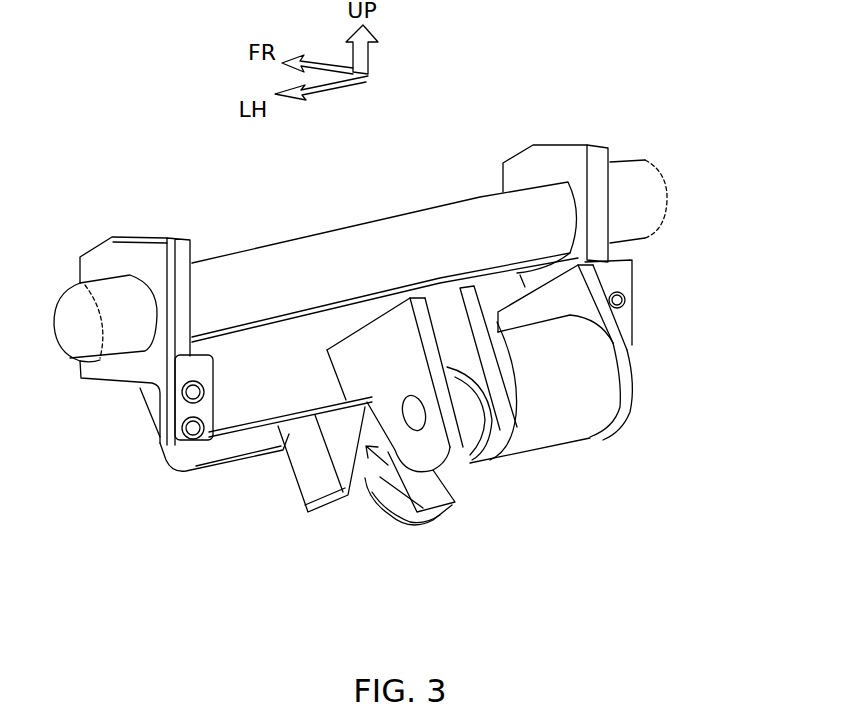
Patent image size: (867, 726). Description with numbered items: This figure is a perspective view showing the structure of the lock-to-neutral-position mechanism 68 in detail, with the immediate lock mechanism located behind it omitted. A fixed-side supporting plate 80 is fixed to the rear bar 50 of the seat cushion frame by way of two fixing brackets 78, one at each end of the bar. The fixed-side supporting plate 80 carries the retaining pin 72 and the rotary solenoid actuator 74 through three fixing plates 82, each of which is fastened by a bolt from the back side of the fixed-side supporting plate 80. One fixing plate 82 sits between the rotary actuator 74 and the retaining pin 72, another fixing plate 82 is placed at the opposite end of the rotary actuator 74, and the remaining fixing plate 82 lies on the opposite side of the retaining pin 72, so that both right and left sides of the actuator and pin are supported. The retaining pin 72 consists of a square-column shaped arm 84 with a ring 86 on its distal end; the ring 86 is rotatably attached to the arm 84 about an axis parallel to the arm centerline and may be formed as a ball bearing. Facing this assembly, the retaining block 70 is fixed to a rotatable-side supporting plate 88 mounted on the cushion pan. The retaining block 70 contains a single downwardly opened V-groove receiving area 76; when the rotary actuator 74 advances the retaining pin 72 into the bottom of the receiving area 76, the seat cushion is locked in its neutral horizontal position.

The rear bar 50 is at (423, 227).
The lock-to-neutral-position mechanism 68 is at (602, 446).
The retaining block 70 is at (369, 390).
The retaining pin 72 is at (458, 530).
The rotary solenoid actuator 74 is at (587, 415).
The receiving area 76 is at (363, 477).
The fixing bracket 78 is at (192, 242).
The fixed-side supporting plate 80 is at (262, 350).
The fixing plate 82 is at (637, 380).
The arm 84 is at (440, 517).
The ring 86 is at (380, 513).
The rotatable-side supporting plate 88 is at (238, 450).